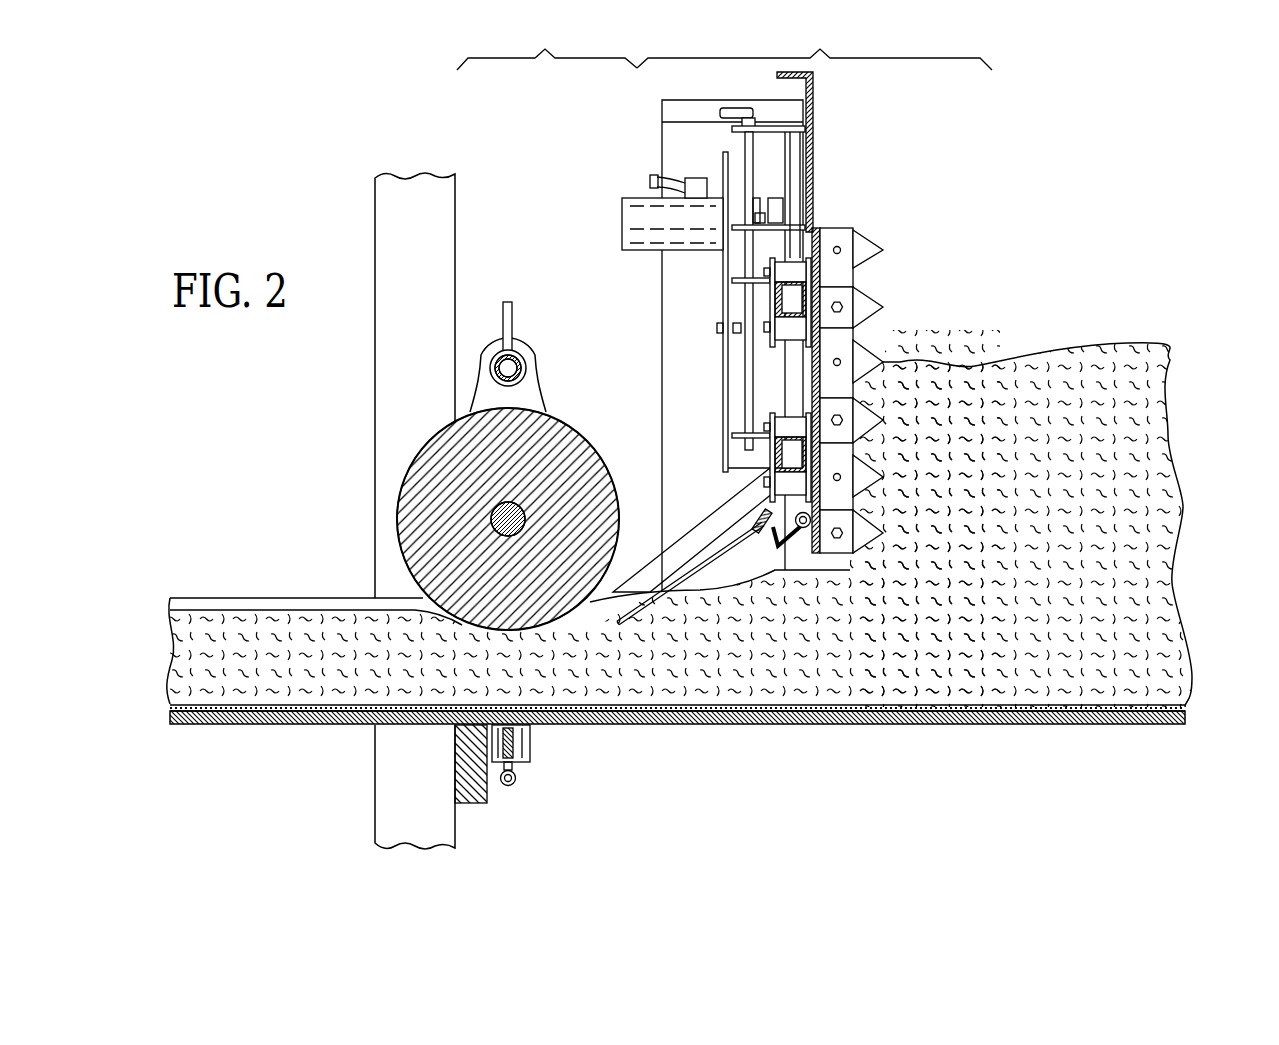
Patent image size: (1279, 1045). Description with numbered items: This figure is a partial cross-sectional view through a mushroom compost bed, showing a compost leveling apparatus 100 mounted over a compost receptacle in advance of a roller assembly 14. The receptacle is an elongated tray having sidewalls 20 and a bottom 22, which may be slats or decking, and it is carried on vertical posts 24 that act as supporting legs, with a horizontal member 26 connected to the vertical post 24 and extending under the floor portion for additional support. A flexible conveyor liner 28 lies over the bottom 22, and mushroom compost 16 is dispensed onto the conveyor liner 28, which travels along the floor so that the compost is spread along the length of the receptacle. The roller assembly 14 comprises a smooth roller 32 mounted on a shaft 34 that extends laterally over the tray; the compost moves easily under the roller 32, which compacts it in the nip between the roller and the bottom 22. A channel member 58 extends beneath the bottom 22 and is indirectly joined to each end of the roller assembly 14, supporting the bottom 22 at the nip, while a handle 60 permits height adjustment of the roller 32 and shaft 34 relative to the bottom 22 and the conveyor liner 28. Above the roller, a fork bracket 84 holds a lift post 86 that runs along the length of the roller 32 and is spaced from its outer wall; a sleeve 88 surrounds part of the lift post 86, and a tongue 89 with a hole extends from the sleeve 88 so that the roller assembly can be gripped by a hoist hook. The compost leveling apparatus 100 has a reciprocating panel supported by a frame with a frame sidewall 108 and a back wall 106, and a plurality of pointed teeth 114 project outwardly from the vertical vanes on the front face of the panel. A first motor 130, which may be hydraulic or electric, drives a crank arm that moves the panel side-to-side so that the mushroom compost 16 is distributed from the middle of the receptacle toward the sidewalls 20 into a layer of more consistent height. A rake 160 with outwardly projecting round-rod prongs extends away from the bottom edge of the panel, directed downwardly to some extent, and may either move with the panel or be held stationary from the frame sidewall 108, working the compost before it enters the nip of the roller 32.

The roller assembly 14 is at (547, 47).
The mushroom compost 16 is at (1104, 358).
The sidewall 20 is at (222, 598).
The bottom 22 is at (1070, 725).
The vertical post 24 is at (375, 215).
The horizontal member 26 is at (487, 802).
The conveyor liner 28 is at (1187, 708).
The roller 32 is at (450, 446).
The shaft 34 is at (500, 517).
The channel member 58 is at (532, 745).
The handle 60 is at (513, 783).
The fork bracket 84 is at (546, 388).
The lift post 86 is at (524, 363).
The sleeve 88 is at (518, 352).
The tongue 89 is at (510, 300).
The compost leveling apparatus 100 is at (814, 47).
The back wall 106 is at (815, 88).
The frame sidewall 108 is at (722, 100).
The pointed teeth 114 is at (882, 262).
The first motor 130 is at (640, 205).
The rake 160 is at (705, 572).